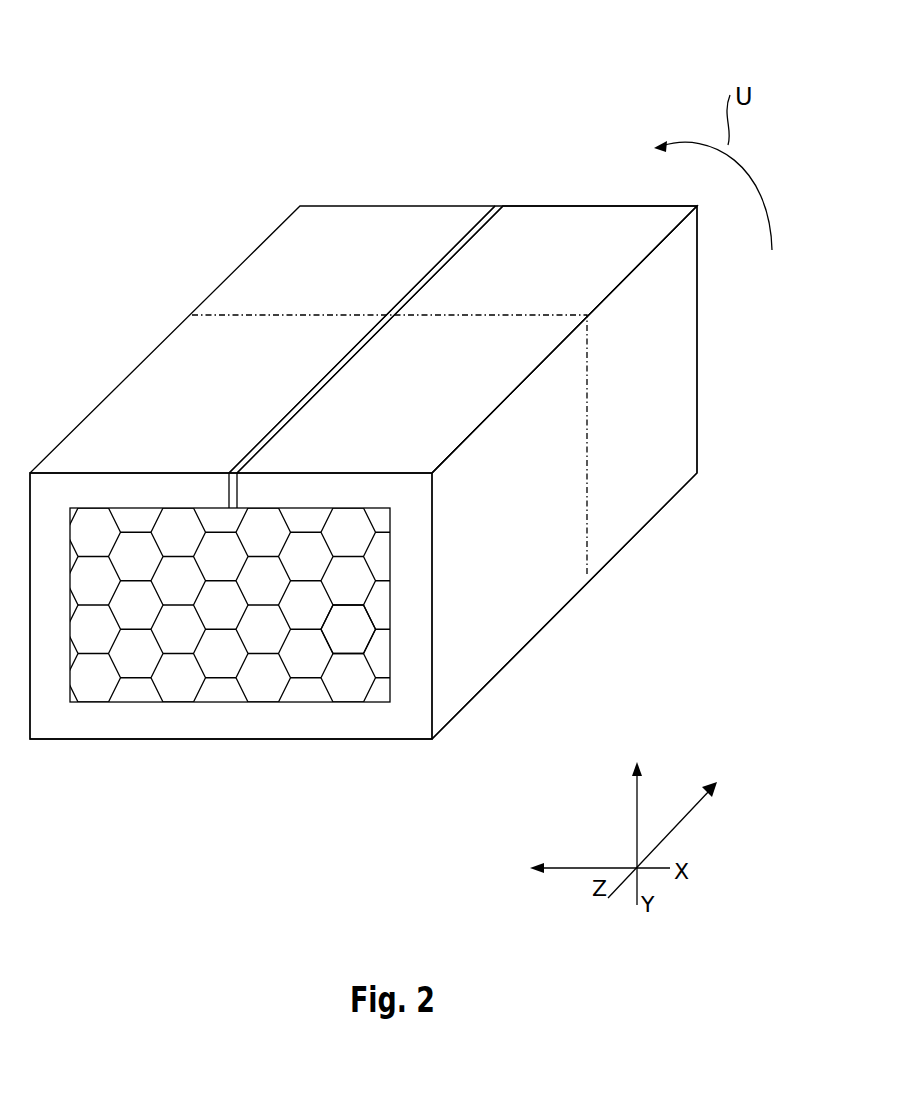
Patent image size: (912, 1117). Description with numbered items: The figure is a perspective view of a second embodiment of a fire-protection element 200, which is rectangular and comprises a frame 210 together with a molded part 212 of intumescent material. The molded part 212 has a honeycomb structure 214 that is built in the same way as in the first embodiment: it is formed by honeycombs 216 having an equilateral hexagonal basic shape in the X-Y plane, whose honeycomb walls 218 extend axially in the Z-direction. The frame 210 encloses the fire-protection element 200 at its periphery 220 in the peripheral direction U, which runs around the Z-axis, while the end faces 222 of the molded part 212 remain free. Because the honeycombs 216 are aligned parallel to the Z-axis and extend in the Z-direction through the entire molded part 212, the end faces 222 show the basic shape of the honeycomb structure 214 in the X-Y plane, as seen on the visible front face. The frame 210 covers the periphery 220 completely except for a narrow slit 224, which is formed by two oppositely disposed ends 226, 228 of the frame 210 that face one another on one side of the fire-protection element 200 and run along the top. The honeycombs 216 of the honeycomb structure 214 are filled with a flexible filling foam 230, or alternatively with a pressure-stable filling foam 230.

The fire-protection element 200 is at (114, 92).
The frame 210 is at (97, 476).
The molded part 212 is at (117, 678).
The honeycomb structure 214 is at (217, 680).
The honeycomb walls 218 is at (139, 658).
The honeycombs 216 is at (352, 680).
The filling foam 230 is at (381, 658).
The periphery 220 is at (588, 513).
The end faces 222 is at (372, 617).
The slit 224 is at (257, 445).
The first end of frame 226 is at (456, 232).
The second end of frame 228 is at (515, 233).